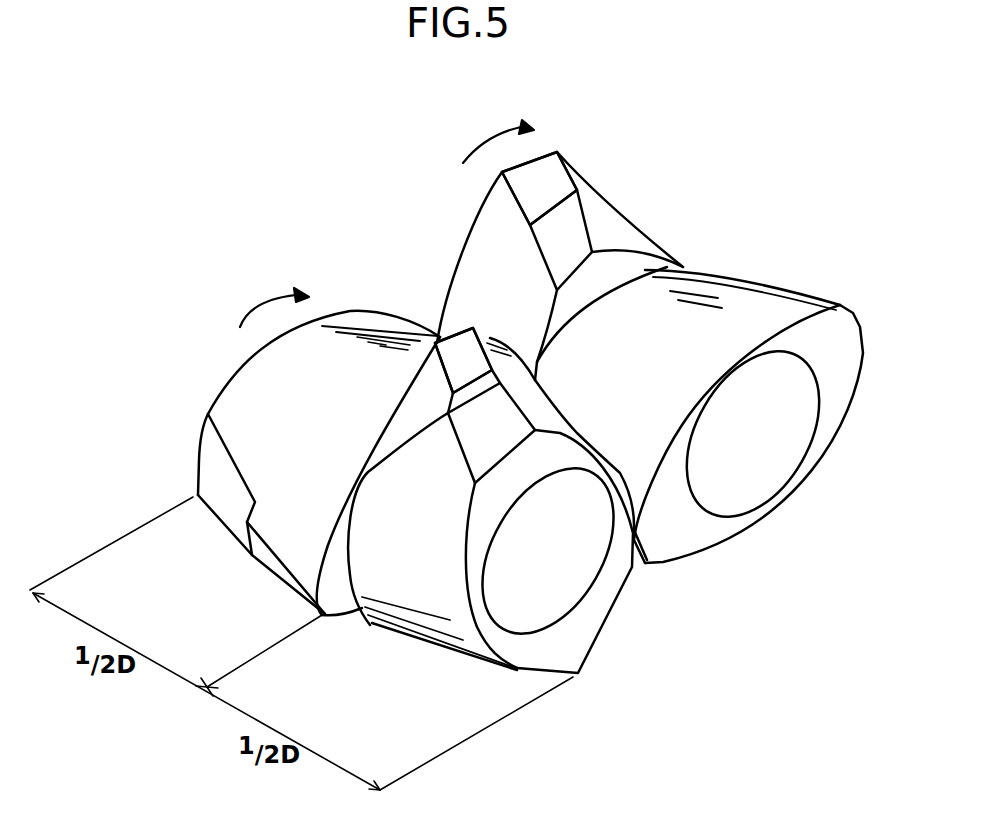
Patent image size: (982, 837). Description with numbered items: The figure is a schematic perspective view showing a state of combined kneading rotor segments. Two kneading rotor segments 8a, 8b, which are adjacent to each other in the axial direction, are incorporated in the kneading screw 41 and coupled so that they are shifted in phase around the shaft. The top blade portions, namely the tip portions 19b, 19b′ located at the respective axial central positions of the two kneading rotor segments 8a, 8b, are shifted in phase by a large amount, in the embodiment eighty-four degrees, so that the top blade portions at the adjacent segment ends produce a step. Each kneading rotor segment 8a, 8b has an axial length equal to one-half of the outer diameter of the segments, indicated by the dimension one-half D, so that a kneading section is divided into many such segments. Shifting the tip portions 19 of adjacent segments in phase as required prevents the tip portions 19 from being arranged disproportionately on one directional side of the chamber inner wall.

The kneading rotor segment 8a is at (470, 645).
The kneading rotor segment 8b is at (208, 413).
The kneading screw 41 is at (777, 527).
The tip portion 19 is at (487, 422).
The tip portion 19b is at (487, 422).
The tip portion 19b′ is at (428, 322).